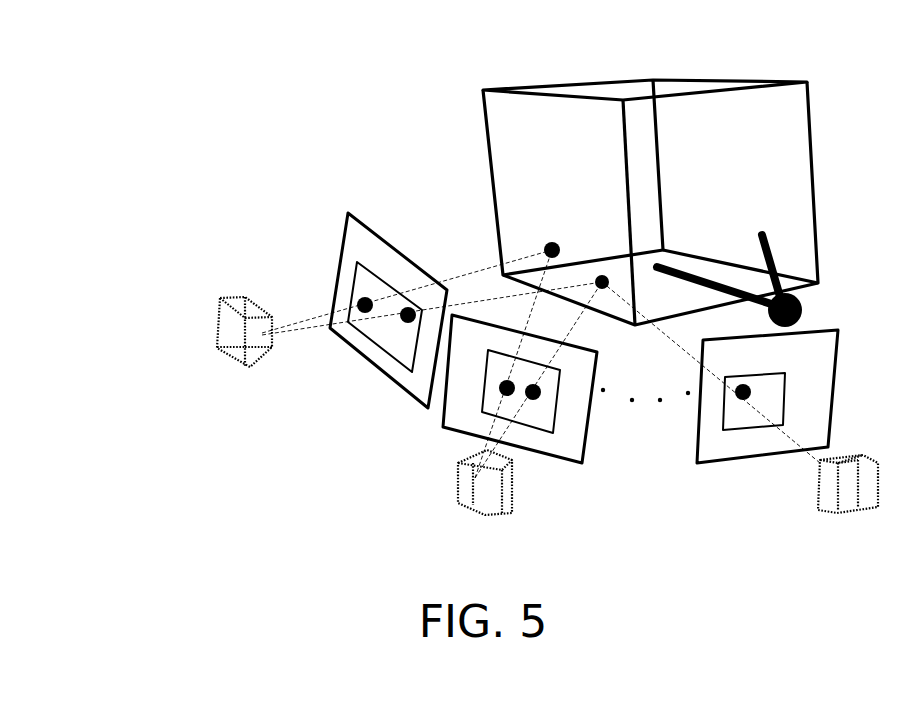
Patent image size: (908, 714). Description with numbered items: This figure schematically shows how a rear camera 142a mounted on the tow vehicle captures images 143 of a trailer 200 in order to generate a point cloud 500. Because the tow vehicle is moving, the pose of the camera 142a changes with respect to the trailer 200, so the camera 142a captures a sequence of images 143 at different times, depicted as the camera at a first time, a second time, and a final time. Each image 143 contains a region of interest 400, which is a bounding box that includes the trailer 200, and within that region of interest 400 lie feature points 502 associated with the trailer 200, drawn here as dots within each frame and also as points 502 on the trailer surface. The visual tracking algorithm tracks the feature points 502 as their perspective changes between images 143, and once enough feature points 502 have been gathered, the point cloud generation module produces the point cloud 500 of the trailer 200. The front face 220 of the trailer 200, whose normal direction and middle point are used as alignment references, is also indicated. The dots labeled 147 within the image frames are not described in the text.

The trailer 200 is at (582, 83).
The front face 220 is at (786, 134).
The point cloud 500 is at (554, 246).
The feature points 502 is at (597, 278).
The images 143 is at (347, 243).
The region of interest 400 is at (357, 277).
The feature points in image 147 is at (358, 300).
The rear camera 142a is at (223, 317).